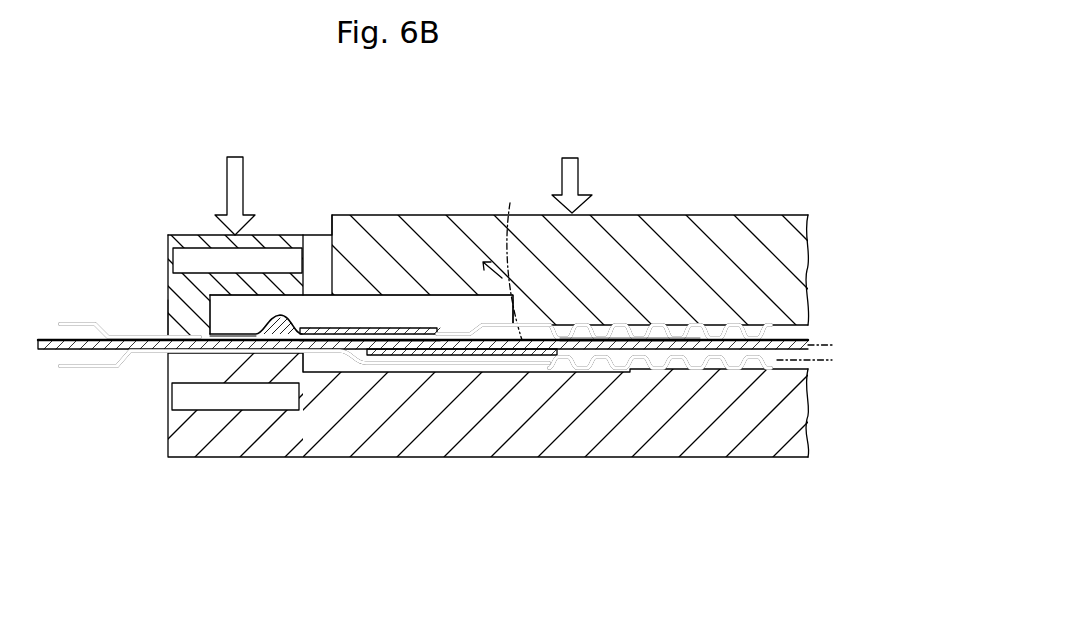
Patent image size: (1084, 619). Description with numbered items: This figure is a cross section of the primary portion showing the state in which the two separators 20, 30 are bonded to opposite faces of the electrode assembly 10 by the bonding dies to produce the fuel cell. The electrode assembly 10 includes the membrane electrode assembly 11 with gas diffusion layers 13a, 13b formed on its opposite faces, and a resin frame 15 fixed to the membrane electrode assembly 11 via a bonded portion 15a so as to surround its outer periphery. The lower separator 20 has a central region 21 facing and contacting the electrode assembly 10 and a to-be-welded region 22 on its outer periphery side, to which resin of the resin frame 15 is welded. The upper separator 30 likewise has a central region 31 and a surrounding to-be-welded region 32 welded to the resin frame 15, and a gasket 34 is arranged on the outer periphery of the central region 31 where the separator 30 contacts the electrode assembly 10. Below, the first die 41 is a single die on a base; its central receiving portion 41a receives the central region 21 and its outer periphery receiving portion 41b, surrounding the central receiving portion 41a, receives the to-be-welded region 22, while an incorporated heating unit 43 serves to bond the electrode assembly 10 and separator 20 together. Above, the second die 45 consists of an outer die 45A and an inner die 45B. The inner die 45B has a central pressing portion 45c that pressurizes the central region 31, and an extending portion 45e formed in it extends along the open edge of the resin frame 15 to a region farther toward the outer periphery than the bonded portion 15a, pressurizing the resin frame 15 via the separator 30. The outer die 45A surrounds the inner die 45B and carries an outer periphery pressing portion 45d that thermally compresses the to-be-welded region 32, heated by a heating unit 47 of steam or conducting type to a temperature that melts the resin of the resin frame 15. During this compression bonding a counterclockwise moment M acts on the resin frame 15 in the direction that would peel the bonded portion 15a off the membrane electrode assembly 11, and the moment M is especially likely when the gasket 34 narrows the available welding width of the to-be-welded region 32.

The electrode assembly 10 is at (108, 362).
The membrane electrode assembly 11 is at (635, 349).
The gas diffusion layer 13a is at (557, 352).
The gas diffusion layer 13b is at (636, 334).
The resin frame 15 is at (323, 344).
The bonded portion 15a is at (555, 332).
The separator 20 is at (580, 375).
The central region 21 is at (665, 361).
The to-be-welded region 22 is at (178, 353).
The separator 30 is at (466, 318).
The central region 31 is at (676, 322).
The to-be-welded region 32 is at (185, 338).
The gasket 34 is at (310, 333).
The first die 41 is at (398, 430).
The central receiving portion 41a is at (765, 385).
The outer periphery receiving portion 41b is at (190, 372).
The heating unit 43 is at (265, 411).
The second die 45 is at (383, 135).
The outer die 45A is at (278, 235).
The inner die 45B is at (383, 237).
The central pressing portion 45c is at (750, 312).
The outer periphery pressing portion 45d is at (180, 310).
The extending portion 45e is at (541, 302).
The heating unit 47 is at (196, 249).
The moment M is at (502, 256).